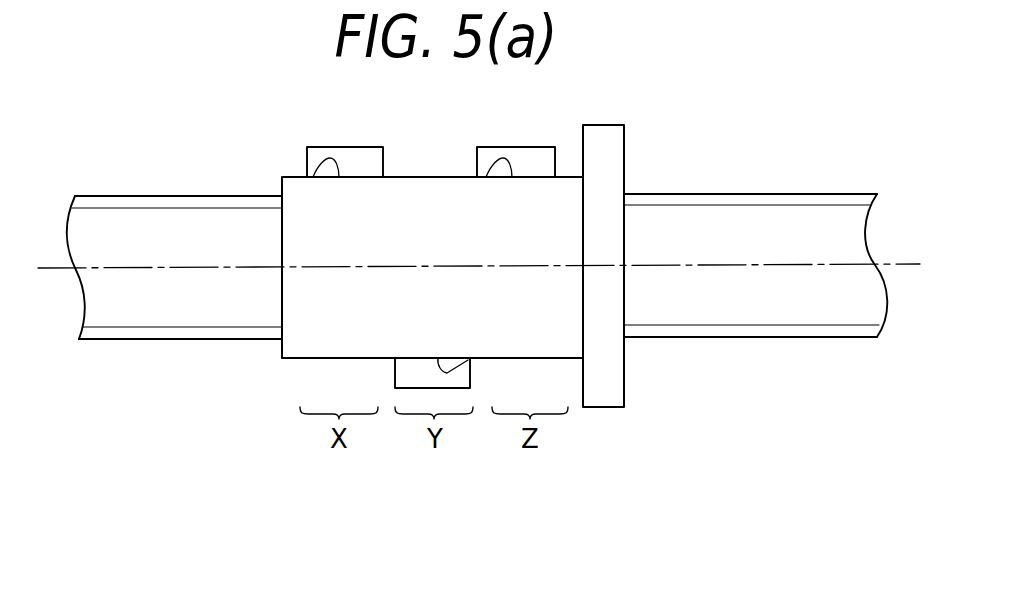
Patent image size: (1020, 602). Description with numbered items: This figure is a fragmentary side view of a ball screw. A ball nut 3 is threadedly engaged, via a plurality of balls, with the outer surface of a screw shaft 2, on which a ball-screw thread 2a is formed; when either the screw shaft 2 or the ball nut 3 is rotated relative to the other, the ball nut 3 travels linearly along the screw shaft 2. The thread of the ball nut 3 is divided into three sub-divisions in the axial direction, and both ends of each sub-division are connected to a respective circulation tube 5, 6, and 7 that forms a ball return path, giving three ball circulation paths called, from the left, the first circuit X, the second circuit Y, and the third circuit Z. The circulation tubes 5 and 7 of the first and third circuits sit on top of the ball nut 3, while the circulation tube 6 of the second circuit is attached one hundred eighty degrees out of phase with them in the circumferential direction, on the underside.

The screw shaft 2 is at (178, 315).
The ball-screw thread 2a is at (100, 337).
The ball nut 3 is at (322, 348).
The circulation tube 5 is at (331, 161).
The circulation tube 6 is at (470, 381).
The circulation tube 7 is at (504, 161).